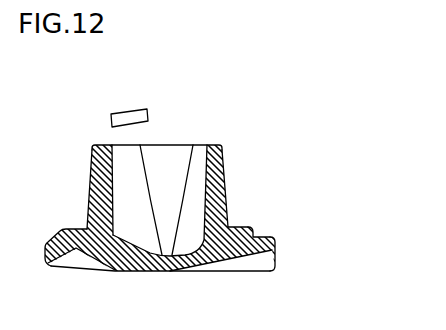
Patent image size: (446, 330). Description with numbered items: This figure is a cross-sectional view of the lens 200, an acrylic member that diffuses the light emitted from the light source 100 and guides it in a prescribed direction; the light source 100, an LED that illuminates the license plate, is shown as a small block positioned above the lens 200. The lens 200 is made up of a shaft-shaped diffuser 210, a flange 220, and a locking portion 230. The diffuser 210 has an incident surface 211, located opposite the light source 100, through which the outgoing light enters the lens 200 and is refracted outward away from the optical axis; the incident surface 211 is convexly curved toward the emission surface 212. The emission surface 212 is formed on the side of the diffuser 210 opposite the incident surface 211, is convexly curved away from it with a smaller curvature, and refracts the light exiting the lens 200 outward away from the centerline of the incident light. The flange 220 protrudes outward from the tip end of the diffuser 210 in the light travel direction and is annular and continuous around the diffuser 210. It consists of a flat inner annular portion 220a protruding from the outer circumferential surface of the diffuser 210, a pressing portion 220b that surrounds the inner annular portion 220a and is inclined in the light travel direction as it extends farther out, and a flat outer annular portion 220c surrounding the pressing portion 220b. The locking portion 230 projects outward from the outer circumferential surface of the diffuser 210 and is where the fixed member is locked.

The light source 100 is at (127, 113).
The lens 200 is at (218, 174).
The diffuser 210 is at (228, 187).
The incident surface 211 is at (137, 240).
The emission surface 212 is at (163, 272).
The flange 220 is at (332, 170).
The inner annular portion 220a is at (238, 226).
The pressing portion 220b is at (255, 232).
The outer annular portion 220c is at (270, 236).
The locking portion 230 is at (225, 160).